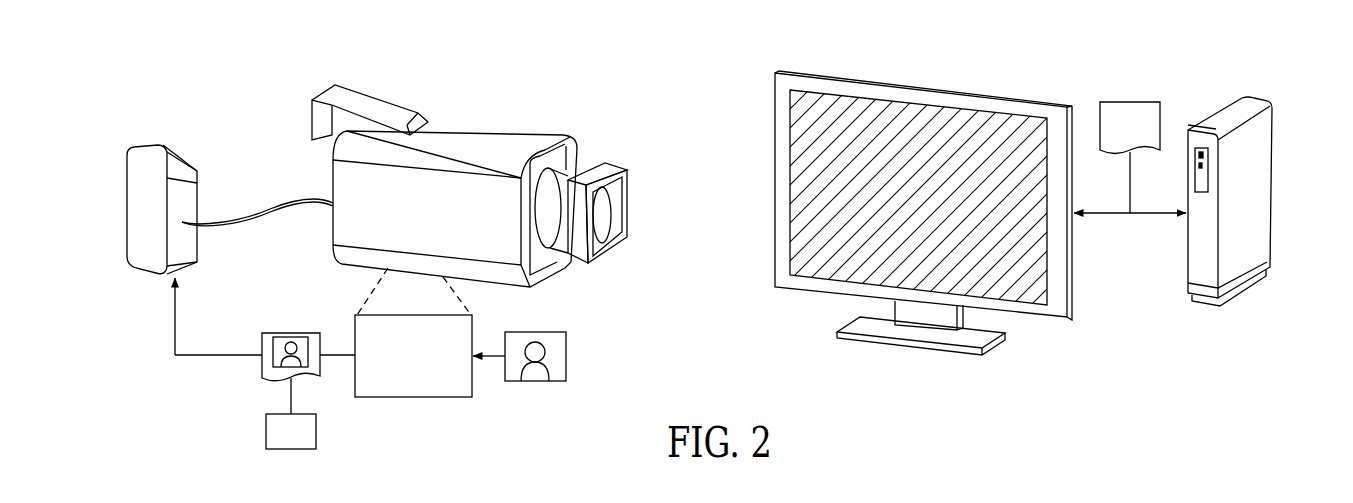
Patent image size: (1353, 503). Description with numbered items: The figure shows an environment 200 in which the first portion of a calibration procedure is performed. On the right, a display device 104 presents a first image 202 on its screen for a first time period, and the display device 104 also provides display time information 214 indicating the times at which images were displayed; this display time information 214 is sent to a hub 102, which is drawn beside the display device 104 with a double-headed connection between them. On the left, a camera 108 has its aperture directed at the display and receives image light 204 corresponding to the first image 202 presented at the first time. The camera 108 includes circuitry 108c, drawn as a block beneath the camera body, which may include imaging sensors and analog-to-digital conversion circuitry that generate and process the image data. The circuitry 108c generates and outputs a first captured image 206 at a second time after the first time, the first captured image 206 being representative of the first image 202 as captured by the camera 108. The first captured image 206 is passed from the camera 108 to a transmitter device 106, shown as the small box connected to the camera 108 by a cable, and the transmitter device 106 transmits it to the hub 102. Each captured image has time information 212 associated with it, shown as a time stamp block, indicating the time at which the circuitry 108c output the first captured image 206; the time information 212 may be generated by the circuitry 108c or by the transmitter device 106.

The environment 200 is at (145, 88).
The hub 102 is at (1258, 200).
The display device 104 is at (1015, 85).
The transmitter device 106 is at (188, 153).
The camera 108 is at (533, 122).
The circuitry 108c is at (420, 397).
The first image 202 is at (817, 155).
The image light 204 is at (575, 342).
The first captured image 206 is at (288, 333).
The time information 212 is at (265, 430).
The display time information 214 is at (1128, 100).